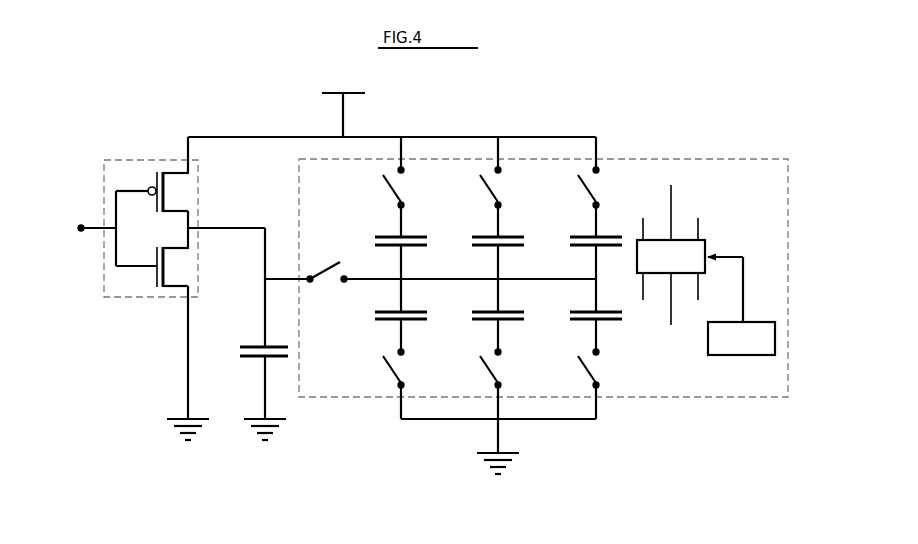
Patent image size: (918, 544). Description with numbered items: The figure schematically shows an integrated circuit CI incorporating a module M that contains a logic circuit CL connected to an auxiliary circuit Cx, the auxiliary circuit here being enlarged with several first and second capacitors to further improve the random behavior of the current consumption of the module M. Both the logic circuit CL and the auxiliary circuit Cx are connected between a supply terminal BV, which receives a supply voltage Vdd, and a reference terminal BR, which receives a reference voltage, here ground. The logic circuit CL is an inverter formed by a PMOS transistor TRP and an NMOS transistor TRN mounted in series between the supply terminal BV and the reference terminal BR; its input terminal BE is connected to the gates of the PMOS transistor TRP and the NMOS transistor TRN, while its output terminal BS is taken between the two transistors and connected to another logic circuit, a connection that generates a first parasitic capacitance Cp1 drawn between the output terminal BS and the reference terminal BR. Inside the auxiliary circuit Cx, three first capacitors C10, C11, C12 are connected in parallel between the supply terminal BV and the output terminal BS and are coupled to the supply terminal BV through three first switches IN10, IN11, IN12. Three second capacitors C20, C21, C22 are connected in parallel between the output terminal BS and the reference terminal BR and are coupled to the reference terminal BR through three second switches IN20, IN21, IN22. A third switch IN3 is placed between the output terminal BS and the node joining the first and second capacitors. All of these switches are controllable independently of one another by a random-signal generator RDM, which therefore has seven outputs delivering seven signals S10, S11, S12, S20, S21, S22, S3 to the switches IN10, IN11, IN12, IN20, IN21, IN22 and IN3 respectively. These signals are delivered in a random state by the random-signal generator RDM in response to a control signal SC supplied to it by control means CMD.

The logic circuit CL is at (139, 158).
The auxiliary circuit Cx is at (680, 158).
The supply voltage Vdd is at (343, 105).
The supply terminal BV is at (335, 130).
The PMOS transistor TRP is at (185, 196).
The NMOS transistor TRN is at (185, 264).
The input terminal BE is at (81, 224).
The output terminal BS is at (267, 226).
The first parasitic capacitance Cp1 is at (250, 345).
The reference terminal BR is at (165, 419).
The module M is at (125, 358).
The integrated circuit CI is at (133, 458).
The third signal S3 is at (325, 258).
The third switch IN3 is at (330, 288).
The first switch IN10 is at (388, 167).
The first switch IN11 is at (487, 167).
The first switch IN12 is at (585, 166).
The signal S10 is at (381, 190).
The signal S11 is at (478, 190).
The signal S12 is at (576, 190).
The first capacitor C10 is at (408, 250).
The first capacitor C11 is at (490, 233).
The first capacitor C12 is at (588, 234).
The second capacitor C20 is at (408, 324).
The second capacitor C21 is at (490, 307).
The second capacitor C22 is at (588, 307).
The signal S20 is at (381, 372).
The signal S21 is at (478, 372).
The signal S22 is at (576, 372).
The second switch IN20 is at (387, 380).
The second switch IN21 is at (485, 382).
The second switch IN22 is at (610, 382).
The random-signal generator RDM is at (670, 259).
The control signal SC is at (733, 251).
The control means CMD is at (741, 338).